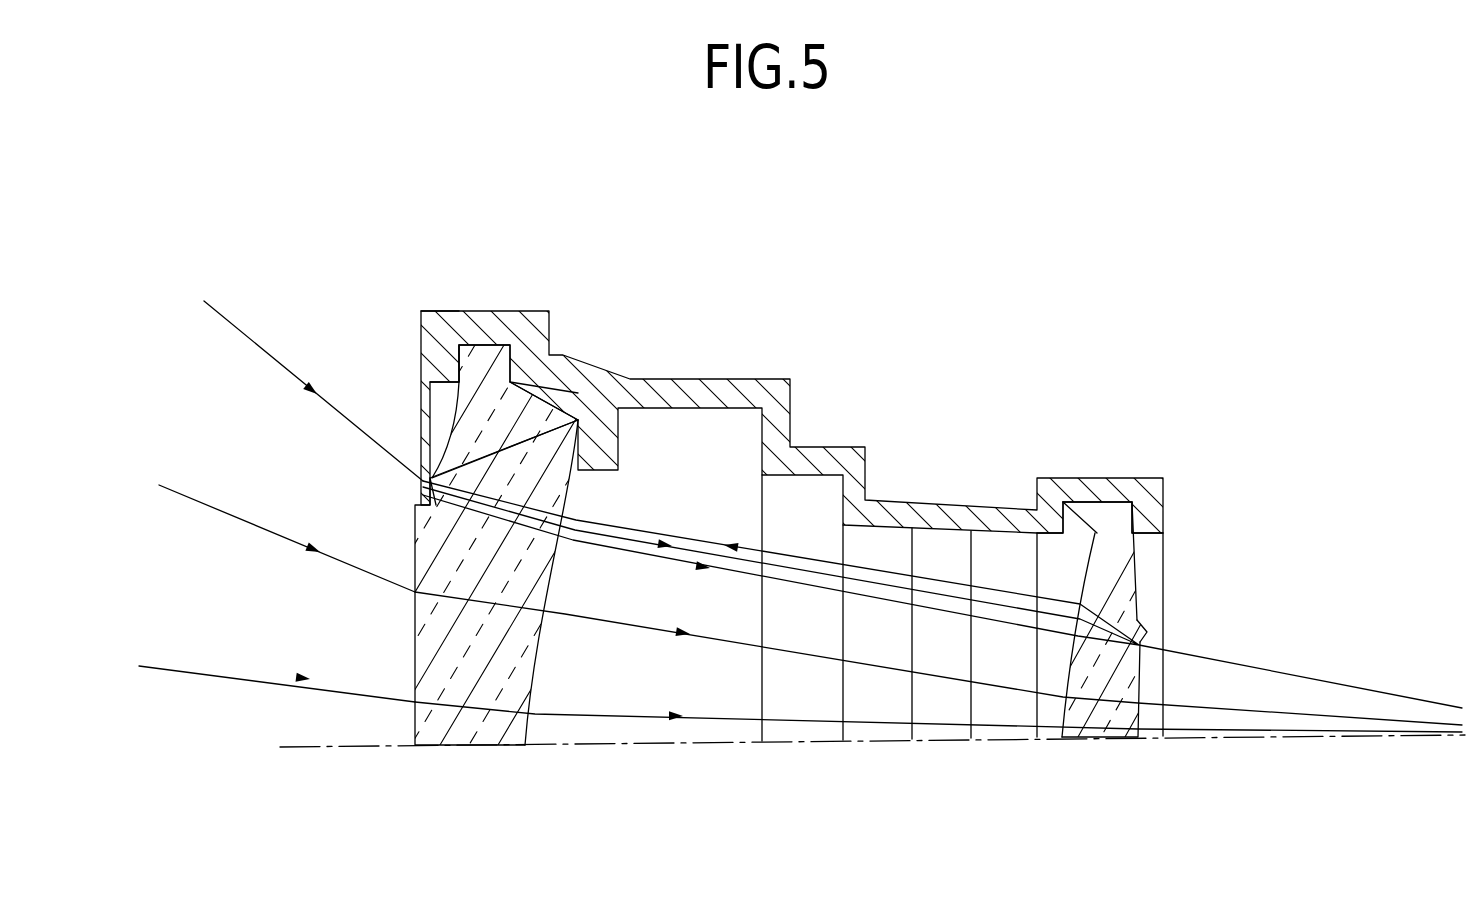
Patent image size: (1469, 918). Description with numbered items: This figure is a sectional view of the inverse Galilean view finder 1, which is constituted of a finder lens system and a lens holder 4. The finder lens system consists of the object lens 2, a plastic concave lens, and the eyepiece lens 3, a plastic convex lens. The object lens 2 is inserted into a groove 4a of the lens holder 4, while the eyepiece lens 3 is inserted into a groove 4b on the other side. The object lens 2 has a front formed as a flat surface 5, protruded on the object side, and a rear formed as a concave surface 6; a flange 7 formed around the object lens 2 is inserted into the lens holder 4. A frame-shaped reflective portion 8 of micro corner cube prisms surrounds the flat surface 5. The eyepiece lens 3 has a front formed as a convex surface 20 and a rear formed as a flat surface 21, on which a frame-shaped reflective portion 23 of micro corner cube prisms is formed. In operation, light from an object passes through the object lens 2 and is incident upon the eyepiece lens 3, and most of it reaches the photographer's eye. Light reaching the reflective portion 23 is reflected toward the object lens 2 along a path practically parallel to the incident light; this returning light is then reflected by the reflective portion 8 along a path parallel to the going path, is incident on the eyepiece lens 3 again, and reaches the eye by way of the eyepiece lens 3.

The inverse Galilean view finder 1 is at (745, 332).
The object lens 2 is at (468, 748).
The eyepiece lens 3 is at (1090, 748).
The lens holder 4 is at (771, 400).
The groove 4a is at (473, 345).
The groove 4b is at (1067, 503).
The flat surface 5 is at (415, 650).
The concave surface 6 is at (530, 670).
The flange 7 is at (497, 352).
The reflective portion 8 is at (428, 438).
The convex surface 20 is at (1062, 655).
The flat surface 21 is at (1133, 555).
The reflective portion 23 is at (1155, 615).